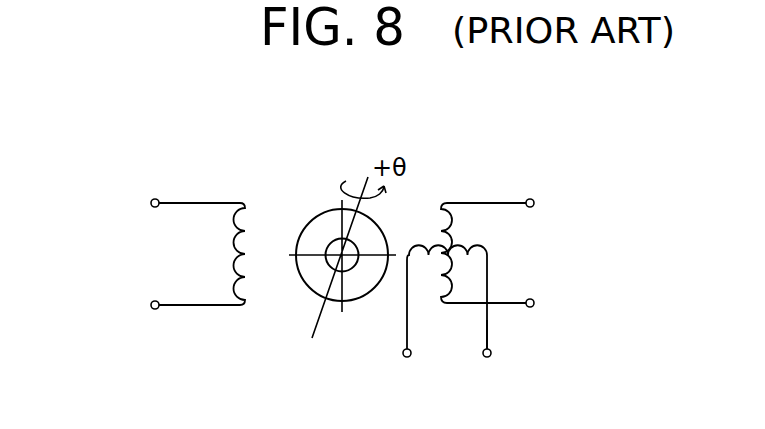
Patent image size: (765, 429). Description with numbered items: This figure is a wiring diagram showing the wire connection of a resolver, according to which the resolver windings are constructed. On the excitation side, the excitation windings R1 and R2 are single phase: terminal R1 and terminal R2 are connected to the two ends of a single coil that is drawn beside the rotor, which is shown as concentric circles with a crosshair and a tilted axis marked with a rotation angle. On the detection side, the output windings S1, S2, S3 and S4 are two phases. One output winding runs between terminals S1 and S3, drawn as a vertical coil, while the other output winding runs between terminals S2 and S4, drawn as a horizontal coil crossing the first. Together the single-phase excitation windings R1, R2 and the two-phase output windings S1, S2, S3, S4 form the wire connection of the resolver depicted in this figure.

The excitation winding R1 is at (161, 247).
The excitation winding R2 is at (139, 306).
The output winding S1 is at (519, 246).
The output winding S2 is at (434, 320).
The output winding S3 is at (543, 306).
The output winding S4 is at (485, 358).